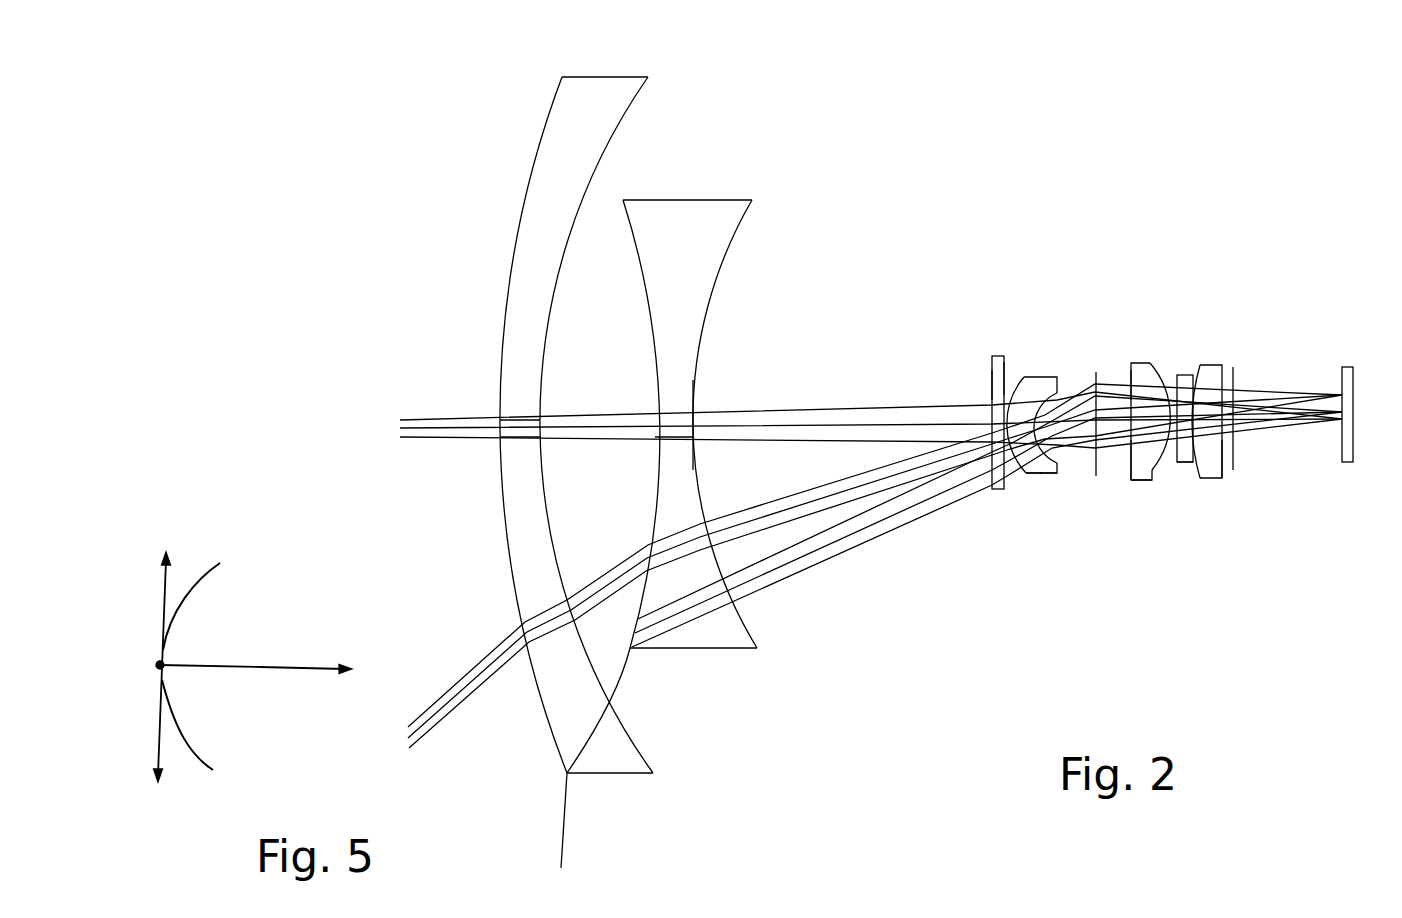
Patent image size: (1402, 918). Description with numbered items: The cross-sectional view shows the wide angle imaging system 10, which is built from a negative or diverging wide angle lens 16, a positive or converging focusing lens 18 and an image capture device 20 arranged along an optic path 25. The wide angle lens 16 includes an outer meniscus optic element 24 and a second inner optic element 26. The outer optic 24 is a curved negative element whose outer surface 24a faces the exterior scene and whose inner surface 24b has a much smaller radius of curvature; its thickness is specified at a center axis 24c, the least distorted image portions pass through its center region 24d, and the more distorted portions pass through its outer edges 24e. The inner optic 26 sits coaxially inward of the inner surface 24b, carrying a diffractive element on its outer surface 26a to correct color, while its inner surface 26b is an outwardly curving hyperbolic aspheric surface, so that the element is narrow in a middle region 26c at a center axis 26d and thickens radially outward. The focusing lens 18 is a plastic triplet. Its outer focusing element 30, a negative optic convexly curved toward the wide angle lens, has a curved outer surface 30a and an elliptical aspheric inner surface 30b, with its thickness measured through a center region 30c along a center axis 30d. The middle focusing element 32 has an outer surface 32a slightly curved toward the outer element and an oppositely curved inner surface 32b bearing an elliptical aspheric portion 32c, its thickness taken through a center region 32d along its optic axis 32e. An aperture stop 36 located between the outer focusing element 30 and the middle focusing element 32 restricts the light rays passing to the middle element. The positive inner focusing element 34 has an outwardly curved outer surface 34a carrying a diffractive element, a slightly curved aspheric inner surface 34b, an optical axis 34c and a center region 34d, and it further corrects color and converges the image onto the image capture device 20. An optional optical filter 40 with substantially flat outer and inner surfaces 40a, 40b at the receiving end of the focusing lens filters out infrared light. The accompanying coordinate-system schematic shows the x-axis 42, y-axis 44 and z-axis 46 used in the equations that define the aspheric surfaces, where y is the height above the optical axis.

In FIG. 2, the wide angle imaging system 10 is at (408, 105).
In FIG. 2, the wide angle lens 16 is at (712, 138).
In FIG. 2, the focusing lens 18 is at (1210, 226).
In FIG. 2, the image capture device 20 is at (1354, 366).
In FIG. 2, the outer meniscus optic element 24 is at (504, 236).
In FIG. 2, the outer surface 24a is at (506, 316).
In FIG. 2, the inner surface 24b is at (587, 199).
In FIG. 2, the center axis 24c is at (473, 432).
In FIG. 2, the center region 24d is at (513, 405).
In FIG. 2, the outer edges 24e is at (562, 147).
In FIG. 2, the optic path 25 is at (422, 406).
In FIG. 5, the optic path 25 is at (273, 668).
In FIG. 2, the inner optic element 26 is at (746, 189).
In FIG. 2, the outer surface 26a is at (644, 317).
In FIG. 2, the inner surface 26b is at (708, 325).
In FIG. 2, the middle region 26c is at (682, 400).
In FIG. 2, the center axis 26d is at (627, 432).
In FIG. 2, the outer focusing element 30 is at (1048, 364).
In FIG. 2, the outer surface 30a is at (1019, 374).
In FIG. 2, the inner surface 30b is at (1058, 458).
In FIG. 2, the center region 30c is at (1062, 403).
In FIG. 2, the center axis 30d is at (1028, 475).
In FIG. 2, the middle focusing element 32 is at (1150, 362).
In FIG. 2, the outer surface 32a is at (1130, 366).
In FIG. 2, the inner surface 32b is at (1178, 376).
In FIG. 2, the elliptical aspheric portion 32c is at (1153, 468).
In FIG. 2, the center region 32d is at (1122, 472).
In FIG. 2, the optic axis 32e is at (1117, 462).
In FIG. 2, the inner focusing element 34 is at (1221, 355).
In FIG. 2, the outer surface 34a is at (1196, 366).
In FIG. 2, the inner surface 34b is at (1224, 467).
In FIG. 2, the optical axis 34c is at (1240, 445).
In FIG. 2, the center region 34d is at (1190, 466).
In FIG. 2, the aperture stop 36 is at (1088, 466).
In FIG. 2, the optical filter 40 is at (979, 358).
In FIG. 2, the outer surface 40a is at (990, 392).
In FIG. 2, the inner surface 40b is at (1006, 366).
In FIG. 5, the x-axis 42 is at (158, 666).
In FIG. 5, the y-axis 44 is at (166, 587).
In FIG. 5, the z-axis 46 is at (307, 666).